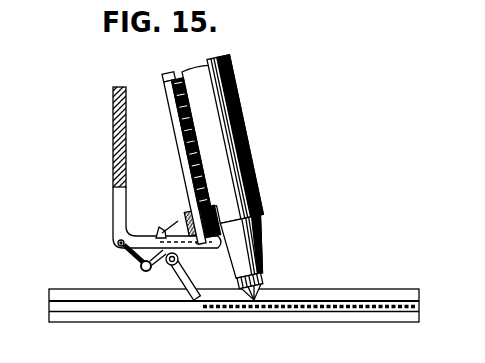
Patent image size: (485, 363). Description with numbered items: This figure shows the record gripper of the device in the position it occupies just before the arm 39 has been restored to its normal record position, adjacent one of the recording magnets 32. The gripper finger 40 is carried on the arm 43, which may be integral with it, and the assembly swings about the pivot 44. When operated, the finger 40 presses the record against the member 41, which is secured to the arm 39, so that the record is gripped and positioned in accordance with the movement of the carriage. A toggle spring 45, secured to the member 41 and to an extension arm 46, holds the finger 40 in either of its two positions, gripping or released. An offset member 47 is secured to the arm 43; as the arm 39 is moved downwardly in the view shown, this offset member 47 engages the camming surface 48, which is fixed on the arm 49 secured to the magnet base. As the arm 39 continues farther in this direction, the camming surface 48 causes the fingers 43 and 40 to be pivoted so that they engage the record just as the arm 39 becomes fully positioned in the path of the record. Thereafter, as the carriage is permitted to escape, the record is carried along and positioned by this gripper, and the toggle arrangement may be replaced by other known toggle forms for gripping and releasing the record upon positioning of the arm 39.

The recording magnet 32 is at (237, 133).
The arm 39 is at (112, 129).
The gripper finger 40 is at (182, 277).
The member 41 is at (202, 254).
The arm 43 is at (212, 213).
The pivot 44 is at (163, 266).
The toggle spring 45 is at (139, 262).
The extension arm 46 is at (160, 231).
The offset member 47 is at (184, 222).
The camming surface 48 is at (215, 227).
The arm 49 is at (167, 96).